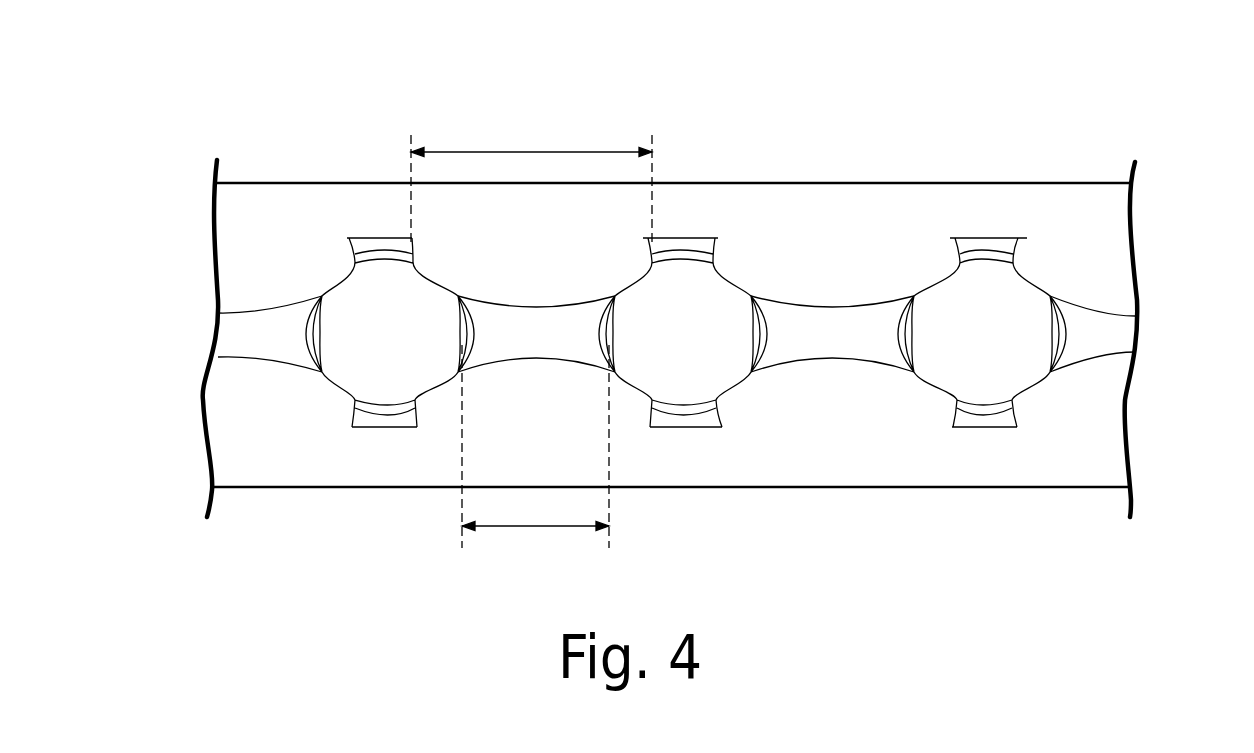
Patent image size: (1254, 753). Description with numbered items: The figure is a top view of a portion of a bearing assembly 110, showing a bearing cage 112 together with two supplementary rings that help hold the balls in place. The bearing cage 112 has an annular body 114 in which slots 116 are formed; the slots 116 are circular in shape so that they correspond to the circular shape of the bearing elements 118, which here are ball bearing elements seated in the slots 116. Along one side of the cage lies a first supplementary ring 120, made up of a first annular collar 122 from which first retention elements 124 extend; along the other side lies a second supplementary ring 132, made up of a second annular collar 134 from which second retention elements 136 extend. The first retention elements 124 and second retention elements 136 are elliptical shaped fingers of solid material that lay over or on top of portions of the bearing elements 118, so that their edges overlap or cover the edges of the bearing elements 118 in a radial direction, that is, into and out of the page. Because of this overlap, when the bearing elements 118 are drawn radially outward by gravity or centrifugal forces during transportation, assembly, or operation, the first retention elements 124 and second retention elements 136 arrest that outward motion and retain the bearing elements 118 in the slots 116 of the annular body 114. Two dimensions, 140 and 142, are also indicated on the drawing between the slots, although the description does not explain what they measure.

The bearing assembly 110 is at (296, 122).
The bearing cage 112 is at (852, 340).
The annular body 114 is at (1105, 329).
The slots 116 is at (310, 328).
The bearing elements 118 is at (384, 378).
The first supplementary ring 120 is at (905, 175).
The first annular collar 122 is at (827, 205).
The first retention elements 124 is at (812, 267).
The second supplementary ring 132 is at (1032, 497).
The second annular collar 134 is at (825, 458).
The second retention elements 136 is at (265, 393).
The chamber spacing 140 is at (537, 527).
The pitch 142 is at (517, 150).